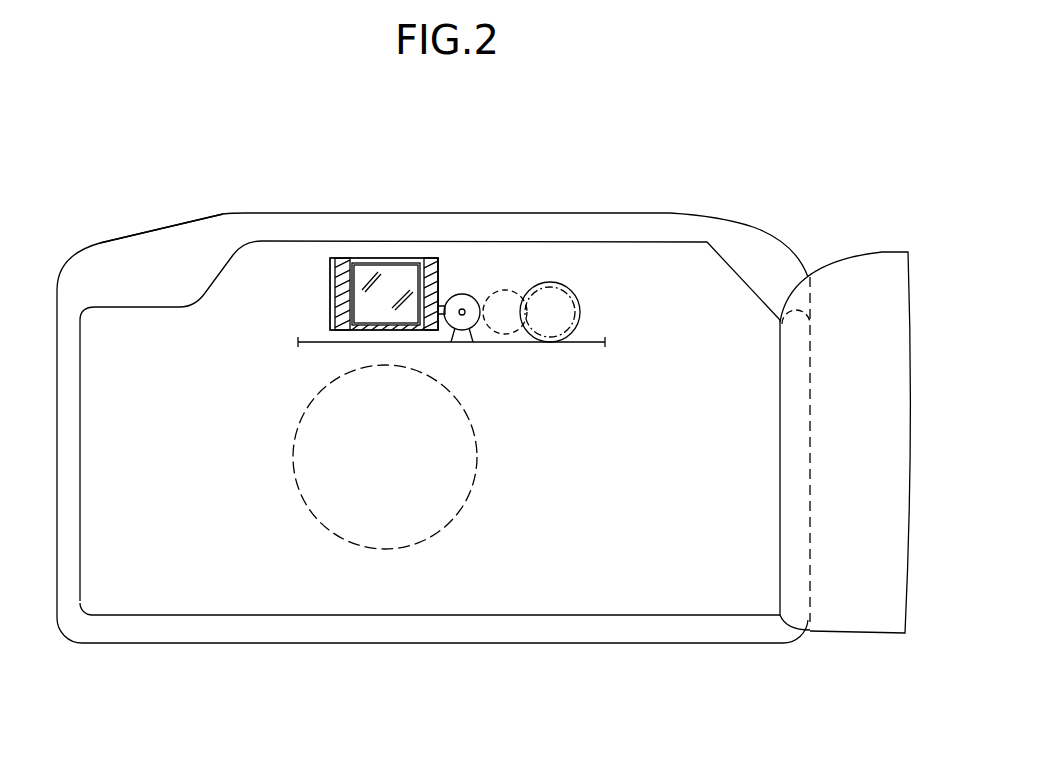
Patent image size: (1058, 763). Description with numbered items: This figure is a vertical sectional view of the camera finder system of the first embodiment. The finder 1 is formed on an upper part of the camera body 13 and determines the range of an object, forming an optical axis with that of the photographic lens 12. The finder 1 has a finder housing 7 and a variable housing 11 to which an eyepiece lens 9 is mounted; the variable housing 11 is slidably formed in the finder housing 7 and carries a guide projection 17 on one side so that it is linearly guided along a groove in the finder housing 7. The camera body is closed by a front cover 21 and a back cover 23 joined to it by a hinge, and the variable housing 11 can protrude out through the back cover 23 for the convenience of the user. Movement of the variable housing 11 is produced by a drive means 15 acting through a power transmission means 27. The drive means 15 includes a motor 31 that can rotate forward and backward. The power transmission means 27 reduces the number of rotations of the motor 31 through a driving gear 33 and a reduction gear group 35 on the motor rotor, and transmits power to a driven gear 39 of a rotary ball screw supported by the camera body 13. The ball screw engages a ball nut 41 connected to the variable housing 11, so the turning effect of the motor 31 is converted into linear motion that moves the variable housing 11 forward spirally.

The finder 1 is at (313, 291).
The finder housing 7 is at (344, 260).
The eyepiece lens 9 is at (389, 262).
The variable housing 11 is at (412, 262).
The photographic lens 12 is at (385, 550).
The camera body 13 is at (731, 197).
The drive means 15 is at (553, 349).
The guide projection 17 is at (330, 325).
The front cover 21 is at (142, 252).
The back cover 23 is at (878, 273).
The power transmission means 27 is at (486, 280).
The motor 31 is at (575, 286).
The driving gear 33 is at (556, 286).
The reduction gear group 35 is at (507, 290).
The driven gear 39 is at (467, 294).
The ball nut 41 is at (442, 305).